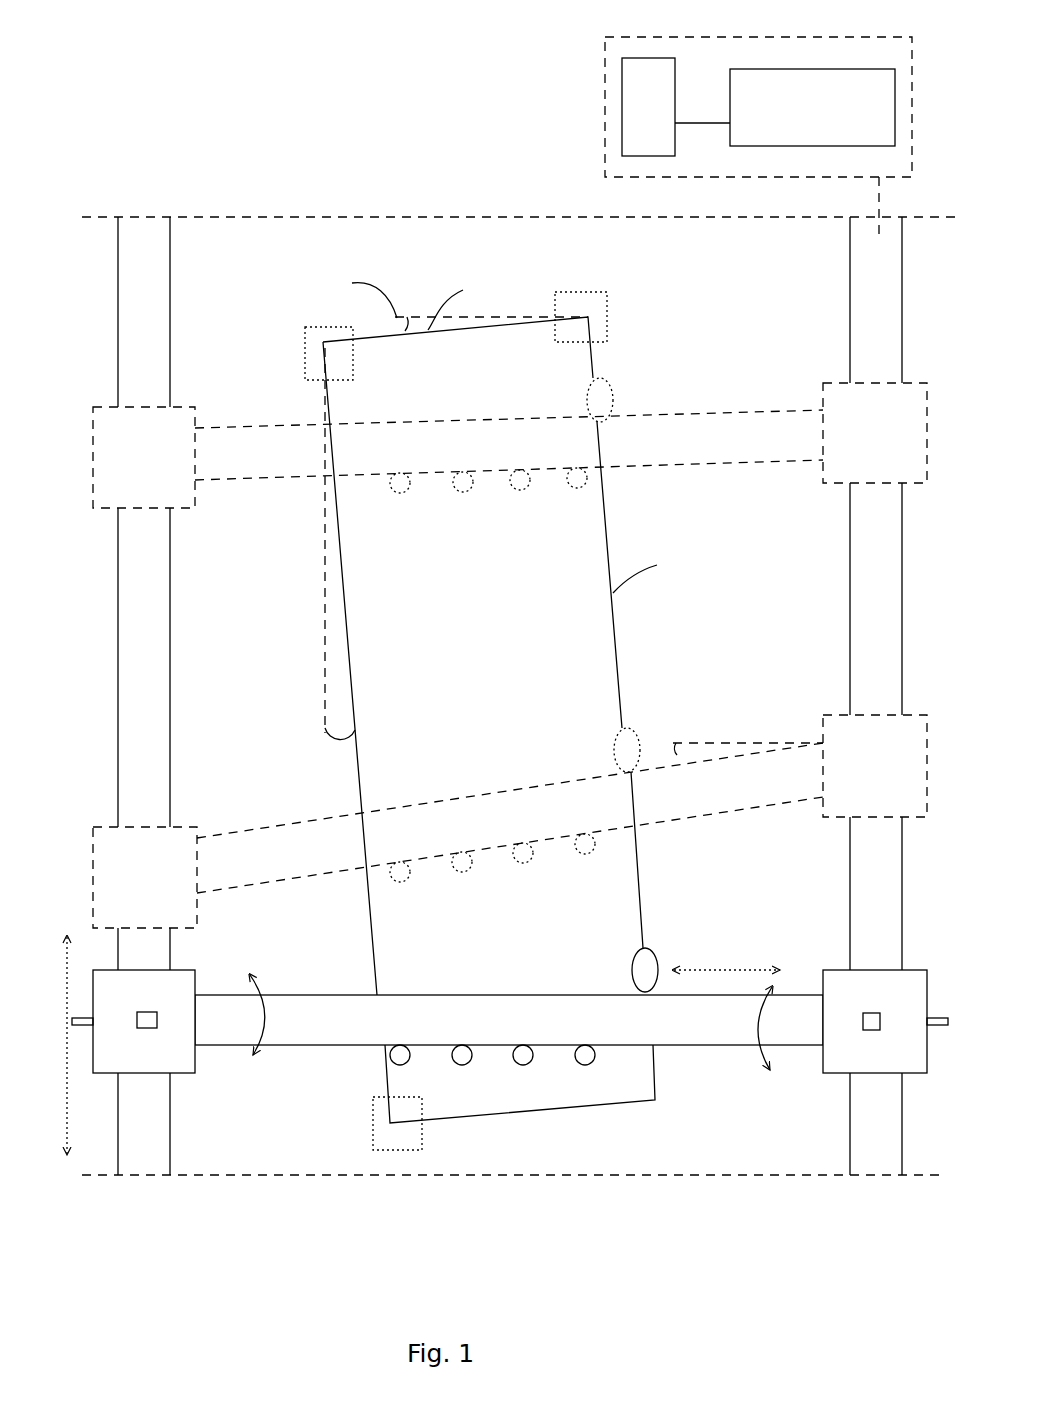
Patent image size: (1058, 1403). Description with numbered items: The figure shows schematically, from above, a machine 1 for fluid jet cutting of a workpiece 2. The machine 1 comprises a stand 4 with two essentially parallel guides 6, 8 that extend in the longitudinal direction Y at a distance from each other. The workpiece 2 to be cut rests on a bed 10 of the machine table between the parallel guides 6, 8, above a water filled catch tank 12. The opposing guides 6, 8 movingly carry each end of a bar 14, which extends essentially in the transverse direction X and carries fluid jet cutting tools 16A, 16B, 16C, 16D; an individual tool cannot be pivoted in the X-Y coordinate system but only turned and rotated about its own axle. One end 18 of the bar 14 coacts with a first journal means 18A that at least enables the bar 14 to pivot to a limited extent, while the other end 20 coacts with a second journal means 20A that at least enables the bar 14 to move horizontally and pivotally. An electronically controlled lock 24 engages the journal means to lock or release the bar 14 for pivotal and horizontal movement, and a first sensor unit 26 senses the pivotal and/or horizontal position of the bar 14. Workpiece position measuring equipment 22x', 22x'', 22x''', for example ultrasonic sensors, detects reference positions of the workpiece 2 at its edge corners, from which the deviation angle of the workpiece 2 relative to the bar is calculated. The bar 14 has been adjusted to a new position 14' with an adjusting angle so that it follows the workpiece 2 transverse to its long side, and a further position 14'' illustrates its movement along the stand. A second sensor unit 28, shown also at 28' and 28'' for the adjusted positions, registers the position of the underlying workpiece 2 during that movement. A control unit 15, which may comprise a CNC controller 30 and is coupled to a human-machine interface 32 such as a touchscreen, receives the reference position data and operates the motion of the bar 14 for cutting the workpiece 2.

The machine for fluid jet cutting 1 is at (374, 174).
The workpiece 2 is at (489, 720).
The stand 4 is at (410, 204).
The parallel guide 6 is at (133, 317).
The parallel guide 8 is at (887, 317).
The bed 10 is at (743, 634).
The water filled catch tank 12 is at (457, 256).
The bar 14 is at (519, 978).
The bar in adjusted position 14' is at (510, 821).
The bar in further position 14'' is at (510, 445).
The control unit 15 is at (633, 58).
The fluid jet cutting tool 16A is at (405, 1063).
The fluid jet cutting tool 16B is at (467, 1063).
The fluid jet cutting tool 16C is at (528, 1063).
The fluid jet cutting tool 16D is at (590, 1063).
The end of the bar 18 is at (183, 1046).
The first journal means 18A is at (205, 1023).
The end of the bar 20 is at (800, 1036).
The second journal means 20A is at (820, 1025).
The workpiece position measuring equipment 22x' is at (356, 1163).
The workpiece position measuring equipment 22x'' is at (299, 316).
The workpiece position measuring equipment 22x''' is at (593, 288).
The electronically controlled lock 24 is at (148, 1012).
The first sensor unit 26 is at (83, 1025).
The second sensor unit 28 is at (675, 933).
The second sensor unit in adjusted bar position 28' is at (657, 718).
The second sensor unit in further bar position 28'' is at (649, 378).
The CNC controller 30 is at (813, 69).
The human-machine interface 32 is at (675, 88).